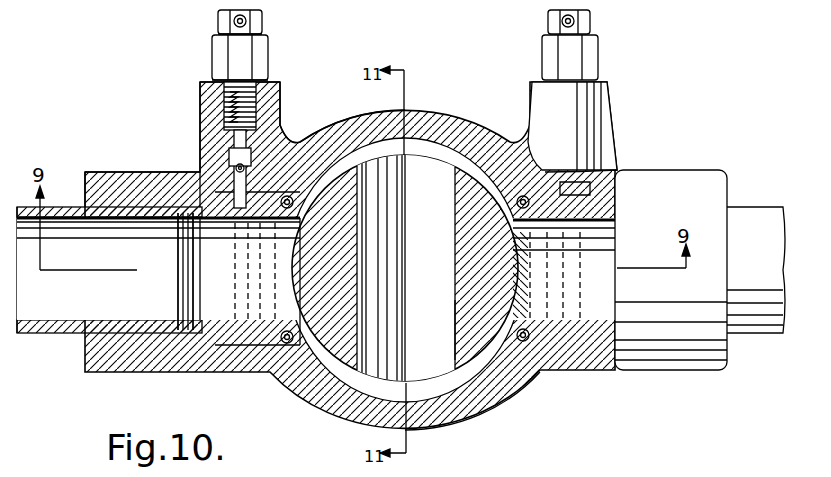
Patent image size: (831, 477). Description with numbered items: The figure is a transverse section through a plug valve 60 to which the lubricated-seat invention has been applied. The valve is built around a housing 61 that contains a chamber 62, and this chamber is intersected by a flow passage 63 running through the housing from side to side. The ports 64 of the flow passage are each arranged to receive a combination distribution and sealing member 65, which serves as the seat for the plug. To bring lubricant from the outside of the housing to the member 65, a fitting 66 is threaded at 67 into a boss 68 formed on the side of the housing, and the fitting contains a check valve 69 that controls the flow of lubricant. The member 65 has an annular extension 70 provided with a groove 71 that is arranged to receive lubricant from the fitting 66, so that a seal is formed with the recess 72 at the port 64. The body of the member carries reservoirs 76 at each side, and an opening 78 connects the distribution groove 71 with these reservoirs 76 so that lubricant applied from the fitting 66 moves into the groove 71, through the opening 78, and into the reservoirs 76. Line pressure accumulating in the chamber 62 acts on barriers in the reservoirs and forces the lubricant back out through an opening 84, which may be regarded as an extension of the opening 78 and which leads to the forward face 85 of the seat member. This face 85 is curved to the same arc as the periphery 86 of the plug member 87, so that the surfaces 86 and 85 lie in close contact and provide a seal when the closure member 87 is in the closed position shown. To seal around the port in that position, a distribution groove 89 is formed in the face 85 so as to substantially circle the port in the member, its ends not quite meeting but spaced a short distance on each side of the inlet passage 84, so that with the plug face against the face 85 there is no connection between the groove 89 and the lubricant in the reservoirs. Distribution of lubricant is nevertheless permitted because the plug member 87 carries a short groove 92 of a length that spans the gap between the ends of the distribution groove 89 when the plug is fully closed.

The plug valve 60 is at (97, 370).
The housing 61 is at (450, 122).
The chamber 62 is at (345, 157).
The flow passage 63 is at (70, 240).
The ports 64 is at (205, 290).
The combination distribution and sealing member 65 is at (218, 203).
The fitting 66 is at (263, 43).
The threads 67 is at (260, 107).
The boss 68 is at (208, 93).
The check valve 69 is at (230, 157).
The annular extension 70 is at (595, 343).
The groove 71 is at (225, 345).
The recess 72 is at (227, 343).
The reservoirs 76 is at (516, 327).
The opening 78 is at (607, 178).
The opening 84 is at (467, 297).
The forward face 85 is at (490, 367).
The periphery 86 is at (452, 150).
The plug member 87 is at (436, 330).
The distribution groove 89 is at (312, 358).
The short groove 92 is at (510, 258).